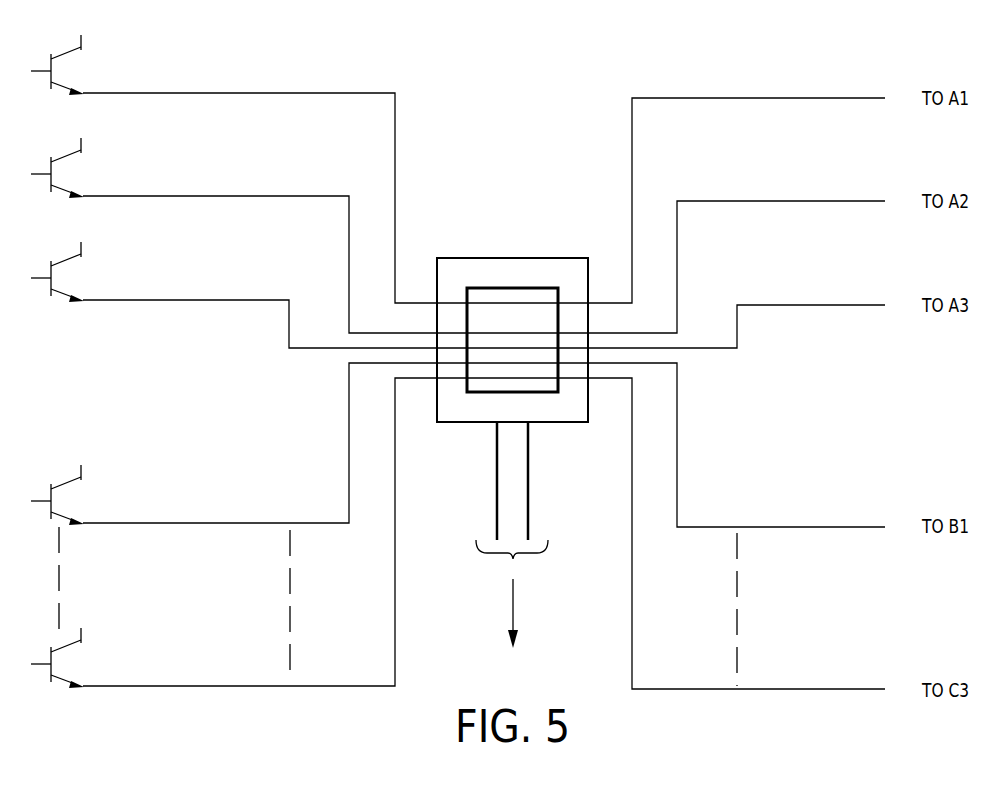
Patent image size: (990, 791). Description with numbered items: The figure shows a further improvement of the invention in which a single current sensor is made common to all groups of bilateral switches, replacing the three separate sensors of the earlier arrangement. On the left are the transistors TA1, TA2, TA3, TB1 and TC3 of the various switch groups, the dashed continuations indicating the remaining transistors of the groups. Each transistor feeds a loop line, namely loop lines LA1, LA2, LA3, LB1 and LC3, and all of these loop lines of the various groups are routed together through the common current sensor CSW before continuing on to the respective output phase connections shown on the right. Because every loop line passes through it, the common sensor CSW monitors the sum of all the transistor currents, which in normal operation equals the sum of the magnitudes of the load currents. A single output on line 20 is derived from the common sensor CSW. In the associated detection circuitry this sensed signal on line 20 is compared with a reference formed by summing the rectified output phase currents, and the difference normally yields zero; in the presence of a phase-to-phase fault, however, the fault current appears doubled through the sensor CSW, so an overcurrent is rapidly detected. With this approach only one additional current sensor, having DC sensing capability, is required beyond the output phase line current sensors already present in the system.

The transistor TA1 is at (74, 65).
The transistor TA2 is at (75, 168).
The transistor TA3 is at (75, 272).
The transistor TB1 is at (74, 495).
The transistor TC3 is at (75, 658).
The loop line LA1 is at (177, 93).
The loop line LA2 is at (173, 196).
The loop line LA3 is at (174, 295).
The loop line LB1 is at (181, 523).
The loop line LC3 is at (322, 686).
The common current sensor CSW is at (558, 426).
The output line 20 is at (514, 580).